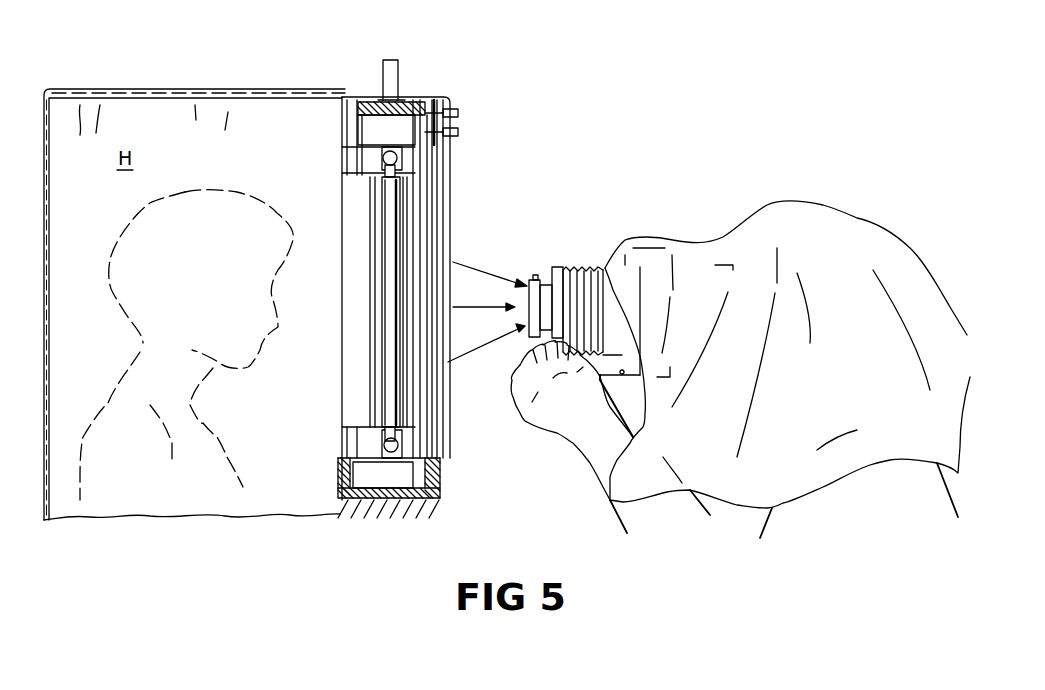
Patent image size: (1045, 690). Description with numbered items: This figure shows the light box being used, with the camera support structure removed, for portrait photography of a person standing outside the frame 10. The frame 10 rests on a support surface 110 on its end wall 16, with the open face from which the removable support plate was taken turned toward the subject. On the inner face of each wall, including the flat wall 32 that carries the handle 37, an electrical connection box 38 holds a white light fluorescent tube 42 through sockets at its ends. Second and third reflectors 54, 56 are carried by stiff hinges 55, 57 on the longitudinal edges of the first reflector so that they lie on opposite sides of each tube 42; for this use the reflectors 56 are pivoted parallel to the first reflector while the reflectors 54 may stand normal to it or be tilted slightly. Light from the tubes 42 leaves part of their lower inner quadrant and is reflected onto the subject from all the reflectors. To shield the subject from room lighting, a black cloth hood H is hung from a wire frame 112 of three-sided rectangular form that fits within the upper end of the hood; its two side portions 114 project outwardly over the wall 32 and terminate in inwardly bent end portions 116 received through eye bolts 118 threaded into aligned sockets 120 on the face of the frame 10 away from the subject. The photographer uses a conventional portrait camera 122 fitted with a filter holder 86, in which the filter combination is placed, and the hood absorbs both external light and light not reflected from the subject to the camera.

The frame 10 is at (413, 82).
The end wall 16 is at (425, 493).
The wall 32 is at (414, 101).
The handle 37 is at (386, 78).
The electrical connection box 38 is at (380, 135).
The fluorescent light tube 42 is at (379, 156).
The second reflector 54 is at (407, 153).
The hinge 55 is at (407, 147).
The third reflector 56 is at (372, 160).
The hinge 57 is at (360, 357).
The filter holder 86 is at (529, 284).
The support surface 110 is at (415, 508).
The wire frame 112 is at (147, 99).
The side portion 114 is at (360, 100).
The end portion 116 is at (453, 100).
The eye bolt 118 is at (459, 113).
The socket 120 is at (443, 143).
The portrait camera 122 is at (552, 275).